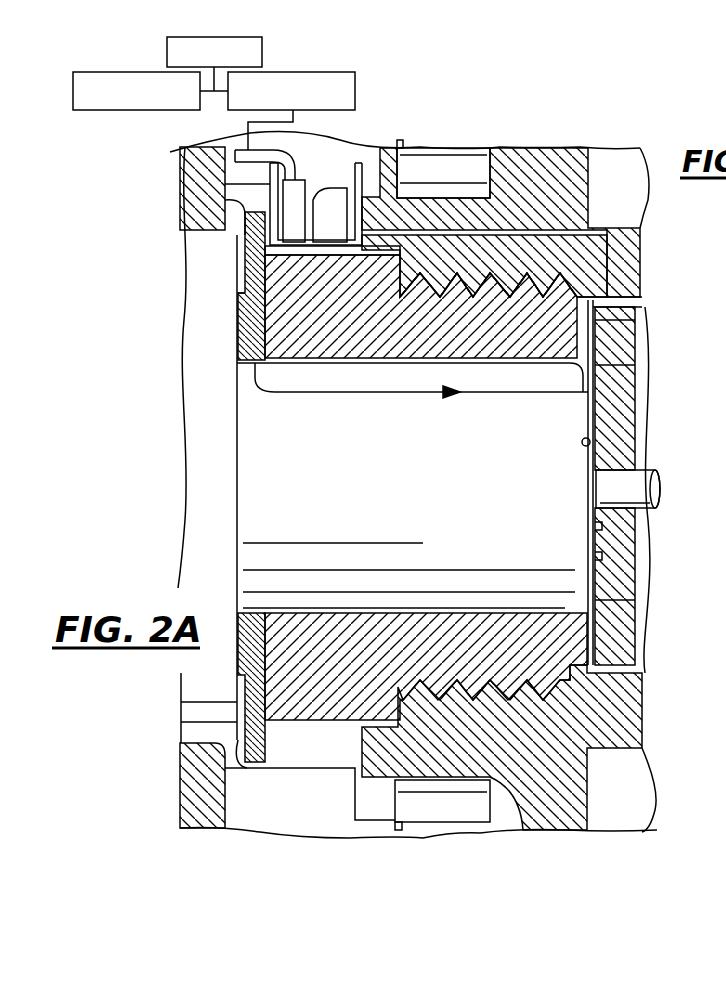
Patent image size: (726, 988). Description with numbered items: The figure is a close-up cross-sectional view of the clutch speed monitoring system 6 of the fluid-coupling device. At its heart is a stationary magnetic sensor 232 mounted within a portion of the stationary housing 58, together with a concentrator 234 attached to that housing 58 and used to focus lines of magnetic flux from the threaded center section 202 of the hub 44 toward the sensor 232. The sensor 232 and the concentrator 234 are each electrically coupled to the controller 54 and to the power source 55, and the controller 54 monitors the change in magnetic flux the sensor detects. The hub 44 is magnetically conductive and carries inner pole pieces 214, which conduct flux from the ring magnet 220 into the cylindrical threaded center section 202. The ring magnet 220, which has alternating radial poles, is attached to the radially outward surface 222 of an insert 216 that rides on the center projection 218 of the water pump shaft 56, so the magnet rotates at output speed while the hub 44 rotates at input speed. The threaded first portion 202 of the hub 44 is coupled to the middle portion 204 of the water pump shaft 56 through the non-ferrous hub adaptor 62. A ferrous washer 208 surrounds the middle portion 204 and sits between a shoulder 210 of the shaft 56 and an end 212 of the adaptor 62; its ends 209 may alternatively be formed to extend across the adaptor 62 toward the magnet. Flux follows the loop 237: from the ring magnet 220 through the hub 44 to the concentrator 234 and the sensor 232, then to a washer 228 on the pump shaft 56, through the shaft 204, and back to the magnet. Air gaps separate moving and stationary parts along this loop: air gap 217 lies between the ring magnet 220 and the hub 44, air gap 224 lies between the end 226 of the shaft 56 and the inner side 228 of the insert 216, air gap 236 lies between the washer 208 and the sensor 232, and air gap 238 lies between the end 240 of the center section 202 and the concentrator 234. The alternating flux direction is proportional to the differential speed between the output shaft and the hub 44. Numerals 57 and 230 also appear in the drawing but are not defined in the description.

The clutch speed monitoring system 6 is at (348, 57).
The hub 44 is at (578, 148).
The controller 54 is at (355, 88).
The power source 55 is at (125, 112).
The water pump shaft 56 is at (263, 404).
The sensor(s) 57 is at (262, 52).
The stationary housing 58 is at (193, 797).
The hub adaptor 62 is at (358, 302).
The threaded center section 202 is at (480, 237).
The middle portion 204 is at (283, 477).
The washer 208 is at (248, 338).
The washer ends 209 is at (248, 236).
The shoulder 210 is at (250, 270).
The end of the adapter 212 is at (250, 318).
The inner pole pieces 214 is at (618, 254).
The insert 216 is at (618, 424).
The air gap 217 is at (617, 296).
The center projection 218 is at (632, 490).
The ring magnet 220 is at (630, 328).
The radially outward surface 222 is at (617, 365).
The air gap 224 is at (595, 553).
The end of the water pump shaft 226 is at (595, 560).
The washer 228 is at (593, 452).
The seal ring 230 is at (618, 598).
The magnetic sensor 232 is at (245, 160).
The concentrator 234 is at (288, 202).
The air gap 236 is at (252, 205).
The magnetic flux loop 237 is at (363, 392).
The air gap 238 is at (358, 225).
The end of the center section 240 is at (340, 192).